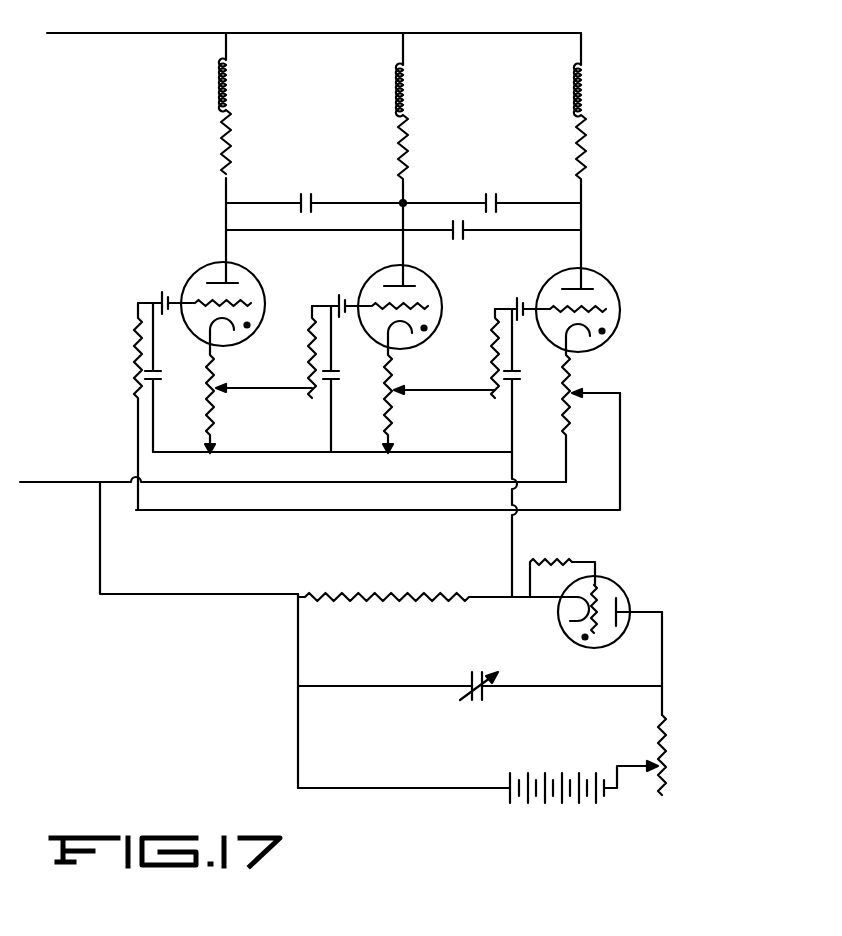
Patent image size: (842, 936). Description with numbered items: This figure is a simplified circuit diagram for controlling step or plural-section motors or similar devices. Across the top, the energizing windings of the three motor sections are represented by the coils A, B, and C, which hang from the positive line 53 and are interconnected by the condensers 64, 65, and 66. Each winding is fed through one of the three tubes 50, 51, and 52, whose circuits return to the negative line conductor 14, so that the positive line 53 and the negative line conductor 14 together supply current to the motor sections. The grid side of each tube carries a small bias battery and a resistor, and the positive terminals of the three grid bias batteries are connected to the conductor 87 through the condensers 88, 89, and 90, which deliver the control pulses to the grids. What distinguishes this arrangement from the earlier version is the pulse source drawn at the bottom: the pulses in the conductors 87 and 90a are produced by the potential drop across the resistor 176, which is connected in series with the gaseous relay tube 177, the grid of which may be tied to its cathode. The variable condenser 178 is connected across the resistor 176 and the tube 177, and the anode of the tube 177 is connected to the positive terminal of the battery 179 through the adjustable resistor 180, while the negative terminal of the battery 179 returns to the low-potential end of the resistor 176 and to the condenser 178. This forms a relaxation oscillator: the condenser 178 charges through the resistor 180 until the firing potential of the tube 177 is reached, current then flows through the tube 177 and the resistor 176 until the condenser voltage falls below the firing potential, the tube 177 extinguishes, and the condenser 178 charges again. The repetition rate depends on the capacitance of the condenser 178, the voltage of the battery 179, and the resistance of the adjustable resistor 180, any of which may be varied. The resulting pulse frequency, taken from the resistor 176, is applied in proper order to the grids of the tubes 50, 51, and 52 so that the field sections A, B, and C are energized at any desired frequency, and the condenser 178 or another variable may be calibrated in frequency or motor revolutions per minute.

The positive line 53 is at (97, 33).
The coil A is at (236, 83).
The coil B is at (410, 87).
The coil C is at (588, 84).
The condenser 64 is at (306, 195).
The condenser 65 is at (491, 196).
The condenser 66 is at (465, 233).
The tube 50 is at (237, 270).
The tube 51 is at (426, 291).
The tube 52 is at (606, 299).
The condenser 88 is at (160, 373).
The condenser 89 is at (339, 374).
The condenser 90 is at (520, 374).
The negative line conductor 14 is at (31, 484).
The conductor 90a is at (145, 594).
The resistor 176 is at (380, 597).
The conductor 87 is at (508, 556).
The gaseous relay tube 177 is at (617, 597).
The variable condenser 178 is at (467, 672).
The battery 179 is at (553, 765).
The adjustable resistor 180 is at (668, 750).